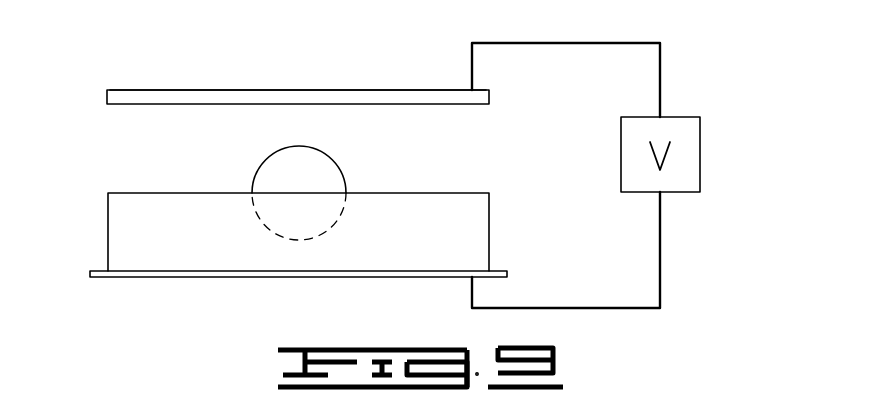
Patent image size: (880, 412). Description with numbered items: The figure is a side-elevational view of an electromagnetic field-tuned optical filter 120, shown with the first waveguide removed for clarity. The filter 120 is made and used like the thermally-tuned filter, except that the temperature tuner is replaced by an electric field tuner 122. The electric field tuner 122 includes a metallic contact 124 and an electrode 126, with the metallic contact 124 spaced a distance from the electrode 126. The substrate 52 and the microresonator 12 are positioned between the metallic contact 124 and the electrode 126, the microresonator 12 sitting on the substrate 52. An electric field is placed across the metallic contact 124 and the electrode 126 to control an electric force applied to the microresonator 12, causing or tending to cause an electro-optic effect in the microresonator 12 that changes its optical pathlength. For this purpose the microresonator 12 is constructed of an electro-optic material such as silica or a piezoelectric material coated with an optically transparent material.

The microresonator 12 is at (336, 165).
The substrate 52 is at (122, 222).
The electromagnetic field-tuned optical filter 120 is at (716, 66).
The electric field tuner 122 is at (308, 88).
The metallic contact 124 is at (220, 278).
The electrode 126 is at (146, 90).